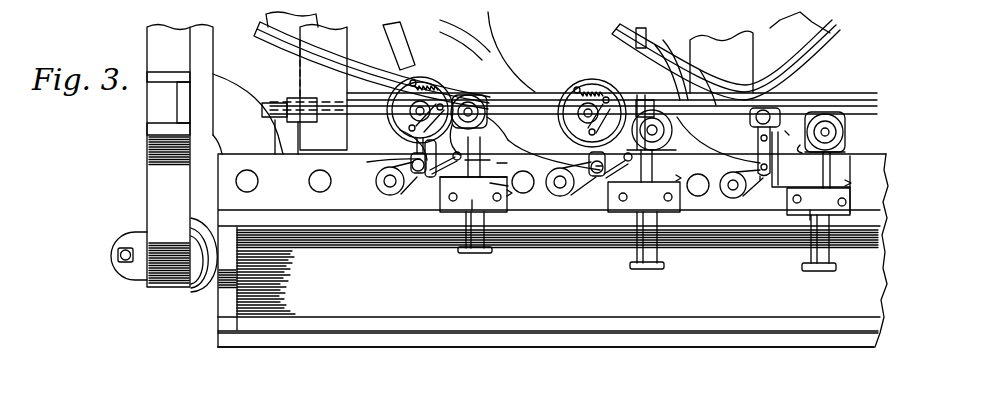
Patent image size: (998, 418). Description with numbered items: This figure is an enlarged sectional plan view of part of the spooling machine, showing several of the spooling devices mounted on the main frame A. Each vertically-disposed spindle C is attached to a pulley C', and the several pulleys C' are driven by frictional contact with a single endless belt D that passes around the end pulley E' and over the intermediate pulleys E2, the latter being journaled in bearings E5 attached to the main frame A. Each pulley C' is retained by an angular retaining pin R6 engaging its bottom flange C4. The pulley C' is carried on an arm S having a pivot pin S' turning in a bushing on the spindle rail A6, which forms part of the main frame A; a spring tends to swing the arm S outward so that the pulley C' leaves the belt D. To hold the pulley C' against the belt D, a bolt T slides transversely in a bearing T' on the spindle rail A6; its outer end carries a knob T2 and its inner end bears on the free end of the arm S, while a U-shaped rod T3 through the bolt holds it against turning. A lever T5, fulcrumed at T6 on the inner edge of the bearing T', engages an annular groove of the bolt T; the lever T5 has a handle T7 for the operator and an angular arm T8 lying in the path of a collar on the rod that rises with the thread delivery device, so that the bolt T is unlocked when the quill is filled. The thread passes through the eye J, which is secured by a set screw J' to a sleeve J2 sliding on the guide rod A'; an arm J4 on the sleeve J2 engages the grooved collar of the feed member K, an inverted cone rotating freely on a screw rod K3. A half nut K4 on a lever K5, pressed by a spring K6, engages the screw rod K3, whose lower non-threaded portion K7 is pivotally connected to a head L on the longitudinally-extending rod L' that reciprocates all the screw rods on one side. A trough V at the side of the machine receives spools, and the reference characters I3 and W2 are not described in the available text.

The main frame A is at (189, 159).
The guide rod A' is at (549, 210).
The spindle rail A6 is at (877, 207).
The arm S is at (552, 250).
The pivot pin S' is at (546, 194).
The trough V is at (630, 313).
The end pulley E' is at (372, 58).
The intermediate pulleys E2 is at (813, 30).
The bearings E5 is at (612, 52).
The bracket I3 is at (307, 42).
The feed member K is at (392, 98).
The screw rod K3 is at (416, 102).
The half nut K4 is at (592, 112).
The lever K5 is at (446, 37).
The spring K6 is at (430, 82).
The lower non-threaded portion K7 is at (413, 113).
The head L is at (809, 129).
The longitudinally-extending rod L' is at (303, 90).
The endless belt D is at (790, 130).
The spindle C is at (677, 111).
The pulley C' is at (687, 106).
The bottom flange C4 is at (750, 70).
The retaining pin R6 is at (494, 116).
The eye J is at (580, 143).
The set screw J' is at (500, 212).
The sleeve J2 is at (418, 172).
The arm J4 is at (424, 160).
The lever W2 is at (722, 145).
The bolt T is at (669, 219).
The bearing T' is at (647, 235).
The knob T2 is at (479, 252).
The U-shaped rod T3 is at (497, 163).
The lever T5 is at (464, 184).
The fulcrum T6 is at (507, 192).
The handle T7 is at (472, 207).
The angular arm T8 is at (596, 168).